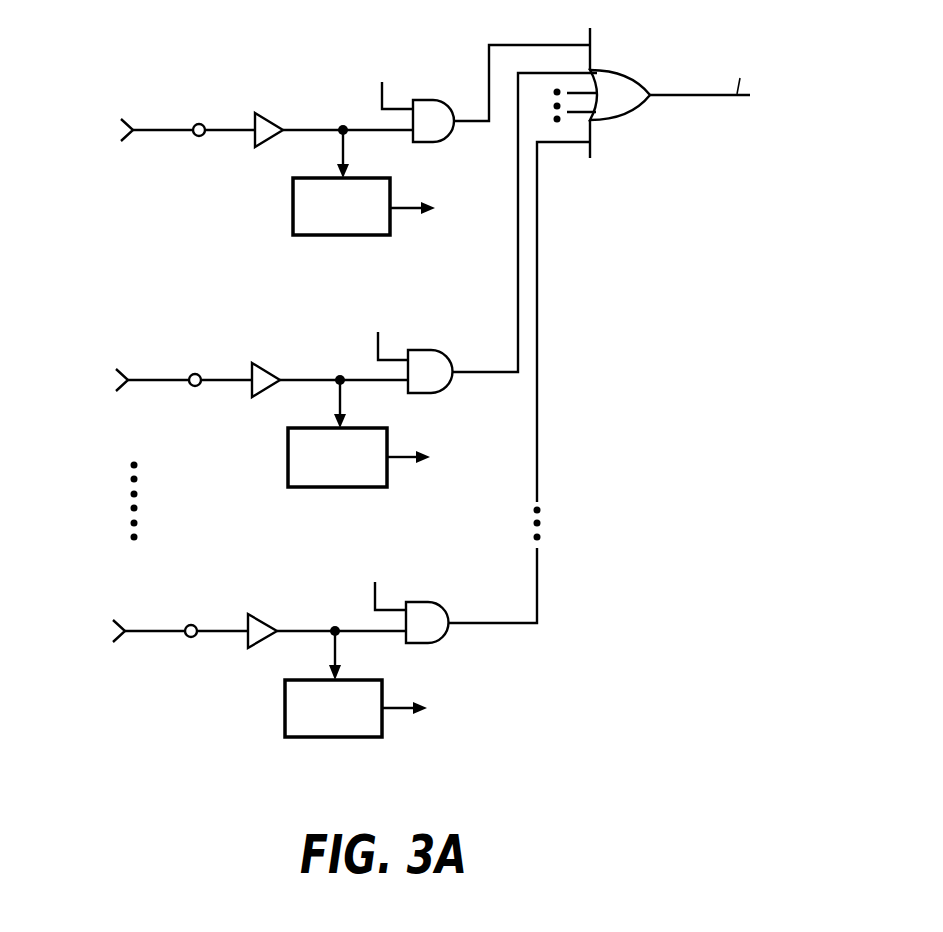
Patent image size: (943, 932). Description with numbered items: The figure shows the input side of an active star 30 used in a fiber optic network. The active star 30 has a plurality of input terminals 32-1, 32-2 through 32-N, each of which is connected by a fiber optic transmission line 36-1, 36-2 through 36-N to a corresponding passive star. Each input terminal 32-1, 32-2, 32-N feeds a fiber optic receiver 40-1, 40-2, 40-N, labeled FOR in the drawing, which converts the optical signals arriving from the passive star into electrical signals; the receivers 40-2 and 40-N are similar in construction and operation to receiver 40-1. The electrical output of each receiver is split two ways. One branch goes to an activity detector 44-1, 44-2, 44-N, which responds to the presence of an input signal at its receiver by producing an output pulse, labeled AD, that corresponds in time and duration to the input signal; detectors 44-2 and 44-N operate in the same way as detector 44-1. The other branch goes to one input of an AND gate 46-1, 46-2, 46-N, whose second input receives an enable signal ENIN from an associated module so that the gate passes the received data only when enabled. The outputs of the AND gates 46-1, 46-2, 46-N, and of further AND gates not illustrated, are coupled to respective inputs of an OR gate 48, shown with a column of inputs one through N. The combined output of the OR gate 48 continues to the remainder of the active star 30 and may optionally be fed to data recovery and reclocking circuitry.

The active star 30 is at (438, 464).
The fiber optic transmission line 36-1 is at (157, 126).
The input terminal 32-1 is at (200, 121).
The fiber optic receiver 40-1 is at (270, 144).
The activity detector circuit 44-1 is at (311, 236).
The AND gate 46-1 is at (441, 141).
The fiber optic transmission line 36-2 is at (147, 376).
The input terminal 32-2 is at (199, 372).
The fiber optic receiver 40-2 is at (270, 393).
The activity detector 44-2 is at (306, 488).
The AND gate 46-2 is at (445, 391).
The fiber optic transmission line 36-N is at (150, 628).
The input terminal 32-N is at (194, 624).
The fiber optic receiver 40-N is at (263, 645).
The activity detector 44-N is at (335, 738).
The AND gate 46-N is at (443, 641).
The OR gate 48 is at (628, 119).